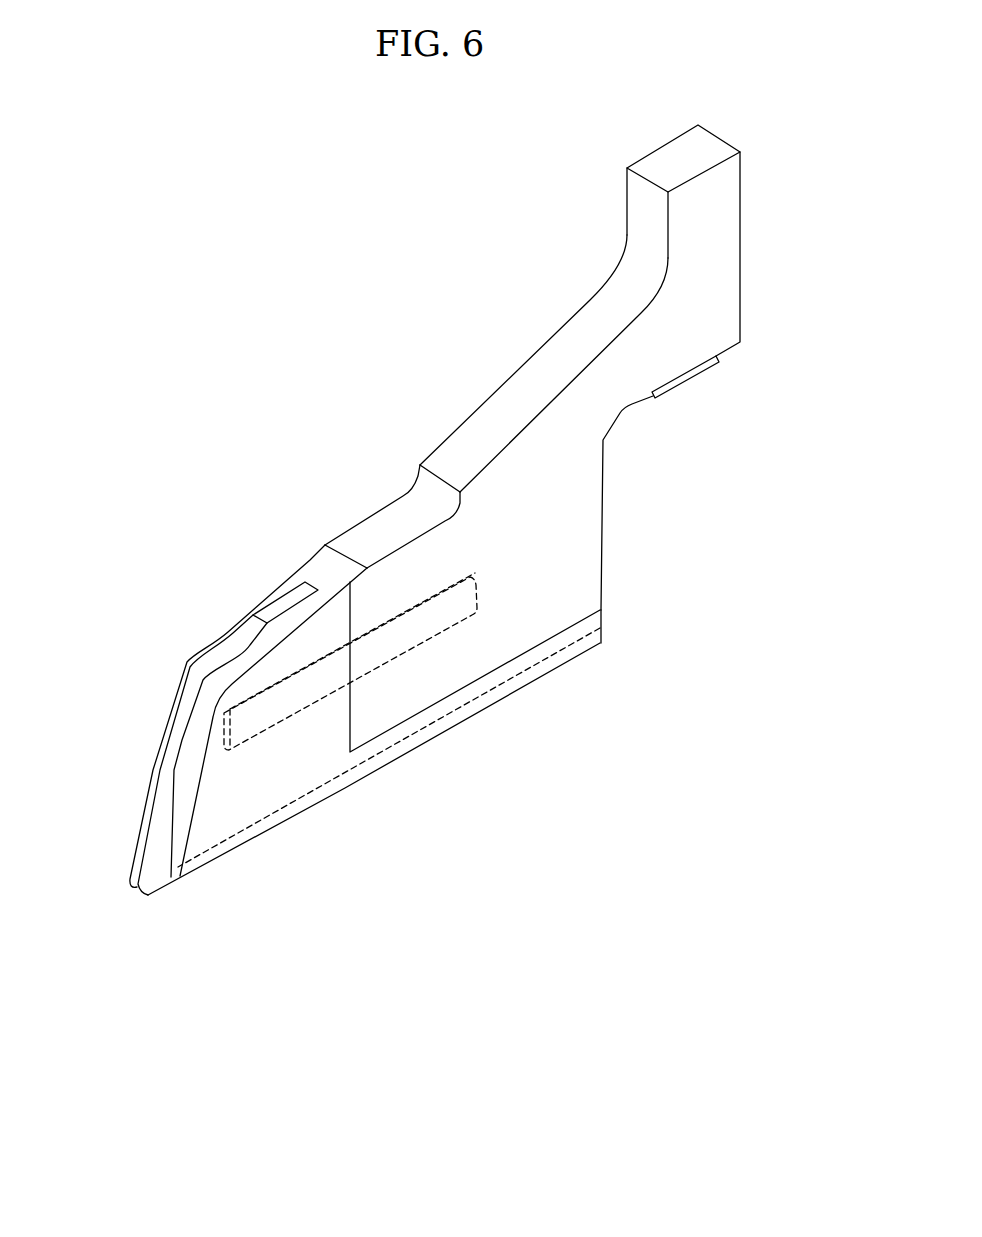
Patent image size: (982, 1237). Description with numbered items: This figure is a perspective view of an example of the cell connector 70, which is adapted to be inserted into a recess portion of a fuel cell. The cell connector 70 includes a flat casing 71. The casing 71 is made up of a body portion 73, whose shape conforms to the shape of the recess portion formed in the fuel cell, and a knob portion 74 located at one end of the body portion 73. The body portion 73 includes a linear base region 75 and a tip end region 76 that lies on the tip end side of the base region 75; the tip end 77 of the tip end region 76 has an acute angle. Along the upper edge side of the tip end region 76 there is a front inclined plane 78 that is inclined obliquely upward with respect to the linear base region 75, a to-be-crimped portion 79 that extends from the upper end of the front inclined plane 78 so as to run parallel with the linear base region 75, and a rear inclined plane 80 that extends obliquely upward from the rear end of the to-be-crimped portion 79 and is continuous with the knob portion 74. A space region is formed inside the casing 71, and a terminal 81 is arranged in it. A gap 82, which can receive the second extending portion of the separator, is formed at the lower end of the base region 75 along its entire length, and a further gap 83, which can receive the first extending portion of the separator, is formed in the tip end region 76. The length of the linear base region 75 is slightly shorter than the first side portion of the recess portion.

The cell connector 70 is at (232, 295).
The casing 71 is at (703, 267).
The body portion 73 is at (707, 754).
The knob portion 74 is at (744, 434).
The linear base region 75 is at (567, 665).
The tip end region 76 is at (247, 795).
The tip end 77 is at (192, 862).
The front inclined plane 78 is at (292, 583).
The to-be-crimped portion 79 is at (390, 527).
The rear inclined plane 80 is at (518, 403).
The terminal 81 is at (273, 723).
The gap 82 is at (367, 778).
The gap 83 is at (158, 805).